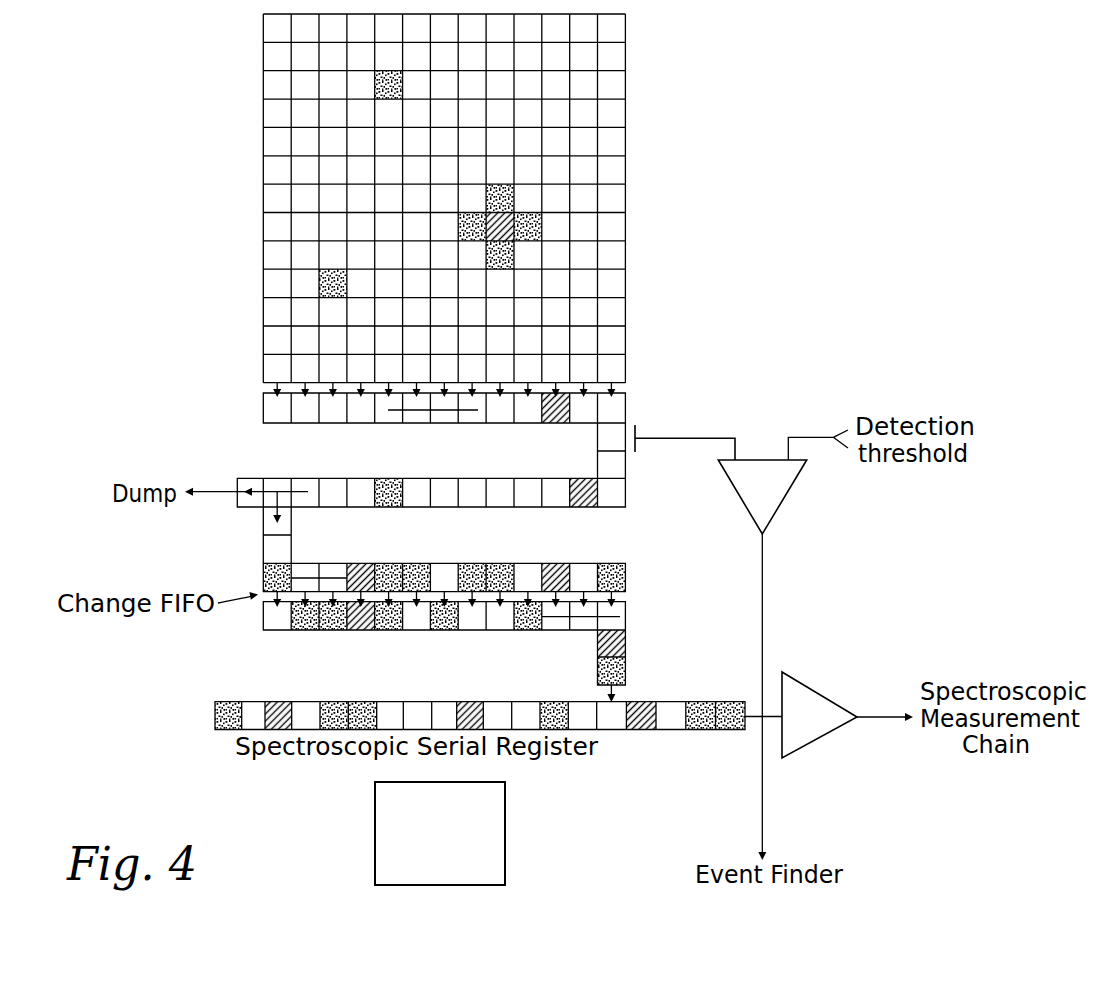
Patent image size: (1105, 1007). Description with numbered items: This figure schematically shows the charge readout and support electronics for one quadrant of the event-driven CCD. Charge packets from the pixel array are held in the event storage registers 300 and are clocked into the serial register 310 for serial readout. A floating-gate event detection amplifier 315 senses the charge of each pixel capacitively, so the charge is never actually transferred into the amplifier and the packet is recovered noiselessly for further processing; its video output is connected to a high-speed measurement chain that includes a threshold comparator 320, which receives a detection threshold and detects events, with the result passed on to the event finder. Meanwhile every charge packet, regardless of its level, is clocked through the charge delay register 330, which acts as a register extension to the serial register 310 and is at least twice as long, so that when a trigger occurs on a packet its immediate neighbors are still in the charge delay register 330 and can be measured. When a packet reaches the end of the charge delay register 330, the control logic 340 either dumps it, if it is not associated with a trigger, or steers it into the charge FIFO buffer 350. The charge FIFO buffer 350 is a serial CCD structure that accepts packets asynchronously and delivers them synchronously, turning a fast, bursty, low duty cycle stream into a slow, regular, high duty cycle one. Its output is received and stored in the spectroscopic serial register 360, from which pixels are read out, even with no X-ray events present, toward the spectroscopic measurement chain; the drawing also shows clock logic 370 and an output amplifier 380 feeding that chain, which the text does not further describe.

The event storage registers 300 is at (626, 60).
The serial register 310 is at (632, 393).
The floating-gate event detection amplifier 315 is at (640, 430).
The threshold comparator 320 is at (790, 492).
The charge delay register 330 is at (448, 507).
The control logic 340 is at (280, 480).
The charge FIFO buffer 350 is at (637, 562).
The spectroscopic serial register 360 is at (662, 702).
The clock logic 370 is at (505, 840).
The output amplifier 380 is at (807, 685).